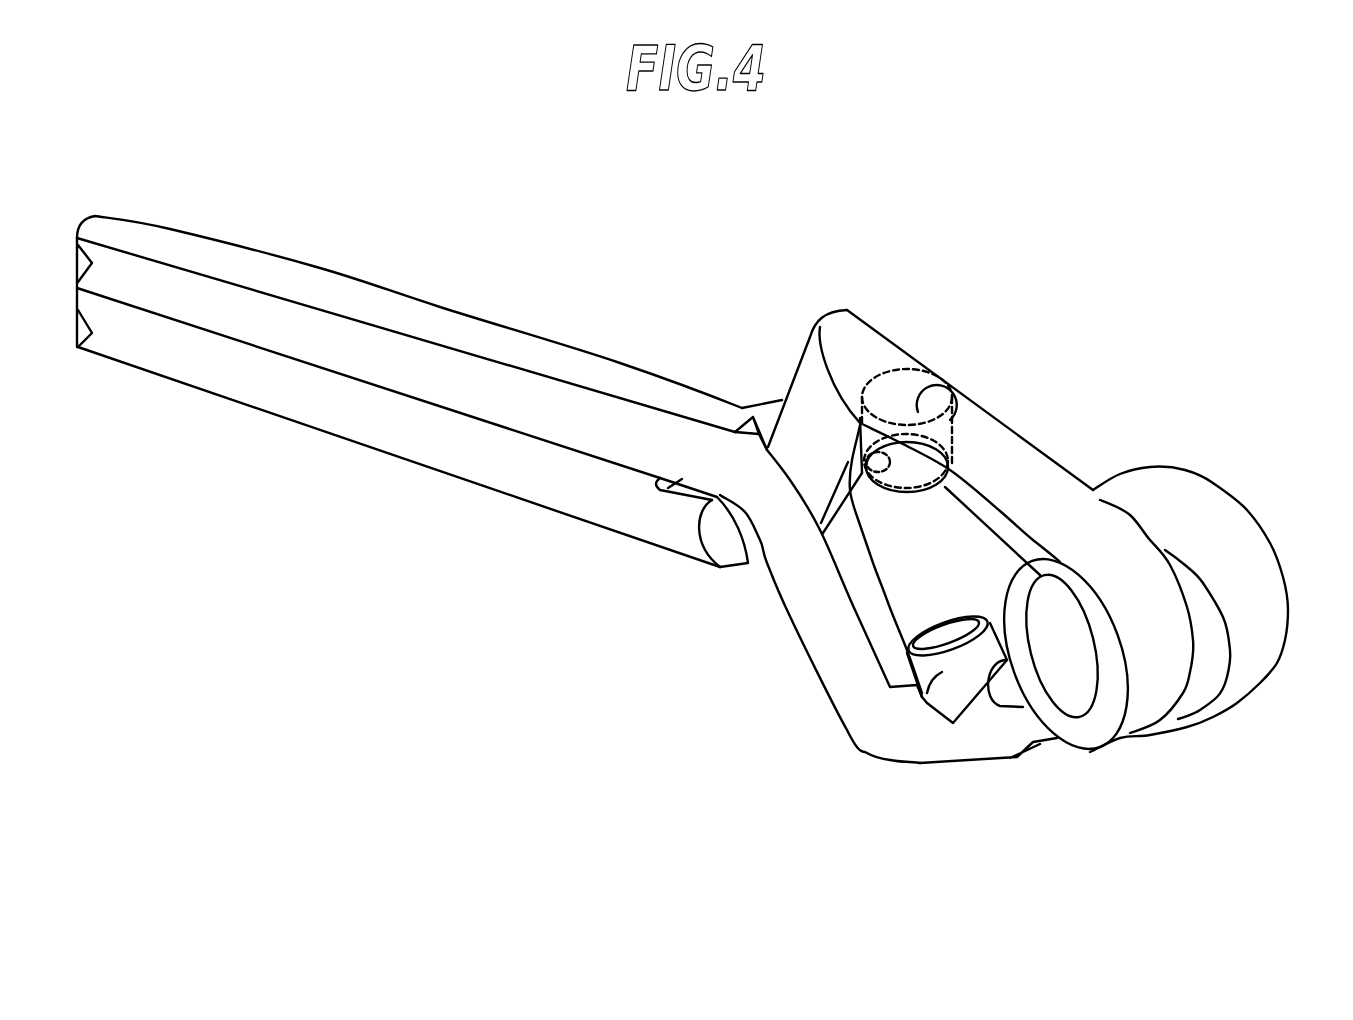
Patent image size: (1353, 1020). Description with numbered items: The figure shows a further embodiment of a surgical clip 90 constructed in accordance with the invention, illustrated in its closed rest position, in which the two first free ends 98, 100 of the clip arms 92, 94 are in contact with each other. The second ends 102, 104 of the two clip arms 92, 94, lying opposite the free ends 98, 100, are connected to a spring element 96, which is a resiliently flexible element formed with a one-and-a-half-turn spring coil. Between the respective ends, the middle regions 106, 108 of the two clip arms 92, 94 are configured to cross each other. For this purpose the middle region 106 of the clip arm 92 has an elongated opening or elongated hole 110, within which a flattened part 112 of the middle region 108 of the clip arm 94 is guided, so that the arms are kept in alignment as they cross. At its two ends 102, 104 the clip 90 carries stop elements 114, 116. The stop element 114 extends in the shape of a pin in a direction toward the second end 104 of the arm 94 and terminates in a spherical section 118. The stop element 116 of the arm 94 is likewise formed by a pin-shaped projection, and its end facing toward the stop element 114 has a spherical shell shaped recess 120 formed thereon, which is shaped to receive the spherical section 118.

The surgical clip 90 is at (618, 308).
The clip arm 92 is at (358, 268).
The clip arm 94 is at (308, 440).
The spring element 96 is at (1247, 700).
The first free end 98 is at (205, 250).
The first free end 100 is at (157, 375).
The second end 102 is at (978, 763).
The second end 104 is at (906, 358).
The middle region 106 is at (776, 612).
The middle region 108 is at (781, 402).
The elongated hole 110 is at (867, 597).
The flattened part 112 is at (812, 407).
The stop element 114 is at (923, 700).
The stop element 116 is at (953, 430).
The spherical section 118 is at (943, 633).
The spherical shell shaped recess 120 is at (888, 478).